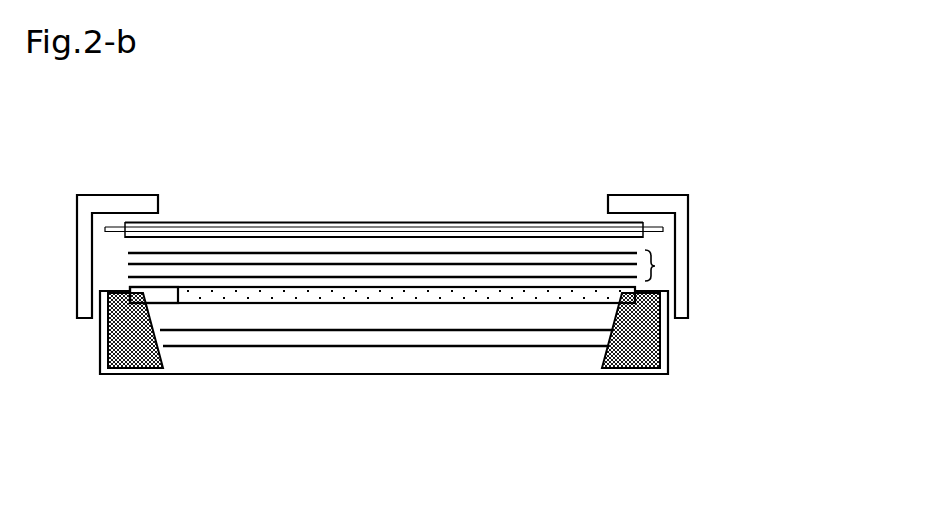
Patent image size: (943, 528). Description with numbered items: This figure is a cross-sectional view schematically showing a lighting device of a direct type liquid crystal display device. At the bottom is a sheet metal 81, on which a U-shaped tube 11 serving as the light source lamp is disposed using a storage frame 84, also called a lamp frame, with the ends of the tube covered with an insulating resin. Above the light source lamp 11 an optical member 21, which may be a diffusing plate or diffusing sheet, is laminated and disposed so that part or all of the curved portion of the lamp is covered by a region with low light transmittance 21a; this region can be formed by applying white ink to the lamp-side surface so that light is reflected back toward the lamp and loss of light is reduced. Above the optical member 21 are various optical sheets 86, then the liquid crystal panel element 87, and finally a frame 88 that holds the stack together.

The frame 88 is at (675, 202).
The liquid crystal panel element 87 is at (663, 227).
The optical sheets 86 is at (655, 264).
The optical member 21 is at (636, 296).
The region with low light transmittance 21a is at (162, 298).
The sheet metal 81 is at (668, 355).
The storage frame 84 is at (652, 340).
The U-shaped tube 11 is at (297, 338).